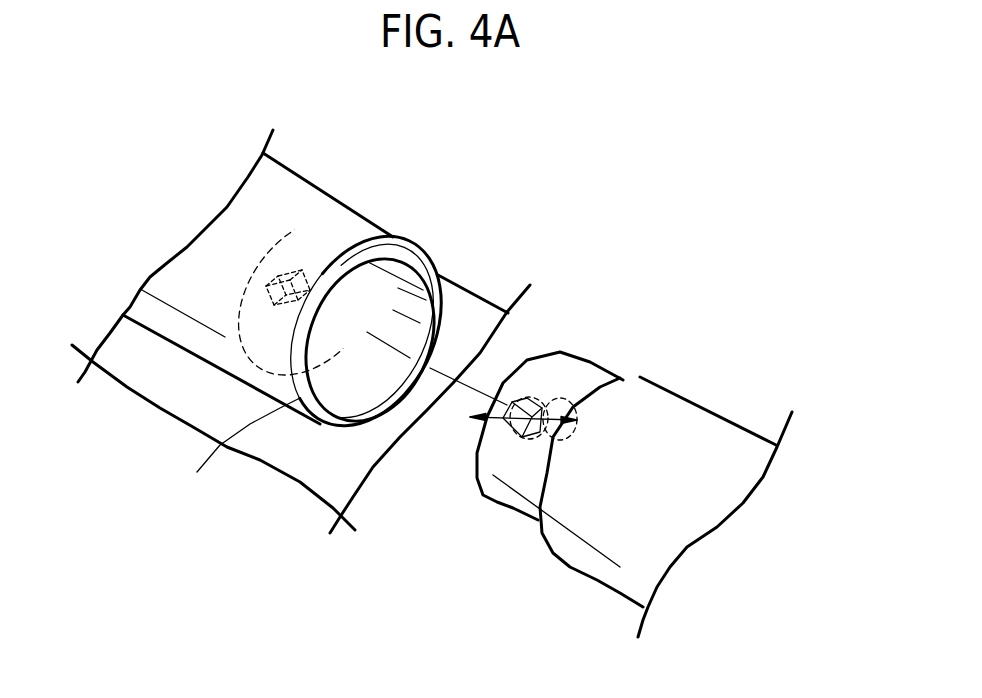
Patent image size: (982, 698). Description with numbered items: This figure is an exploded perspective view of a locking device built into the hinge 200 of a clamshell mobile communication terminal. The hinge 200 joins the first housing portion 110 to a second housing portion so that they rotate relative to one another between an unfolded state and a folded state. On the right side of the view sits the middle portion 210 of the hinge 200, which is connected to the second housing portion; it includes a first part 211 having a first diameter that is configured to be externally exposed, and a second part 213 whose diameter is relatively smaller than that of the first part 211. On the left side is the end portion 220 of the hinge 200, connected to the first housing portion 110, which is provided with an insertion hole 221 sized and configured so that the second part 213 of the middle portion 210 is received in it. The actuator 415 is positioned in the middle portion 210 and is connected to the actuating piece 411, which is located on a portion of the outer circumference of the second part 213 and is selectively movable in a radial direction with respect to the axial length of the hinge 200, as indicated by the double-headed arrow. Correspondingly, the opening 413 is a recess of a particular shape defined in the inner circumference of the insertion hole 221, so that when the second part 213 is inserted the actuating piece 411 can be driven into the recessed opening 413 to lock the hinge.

The first housing portion 110 is at (167, 391).
The hinge 200 is at (662, 162).
The middle portion 210 is at (720, 403).
The first part 211 is at (617, 572).
The second part 213 is at (513, 502).
The end portion 220 is at (328, 181).
The insertion hole 221 is at (438, 303).
The actuating piece 411 is at (505, 423).
The opening 413 is at (188, 483).
The actuator 415 is at (560, 400).